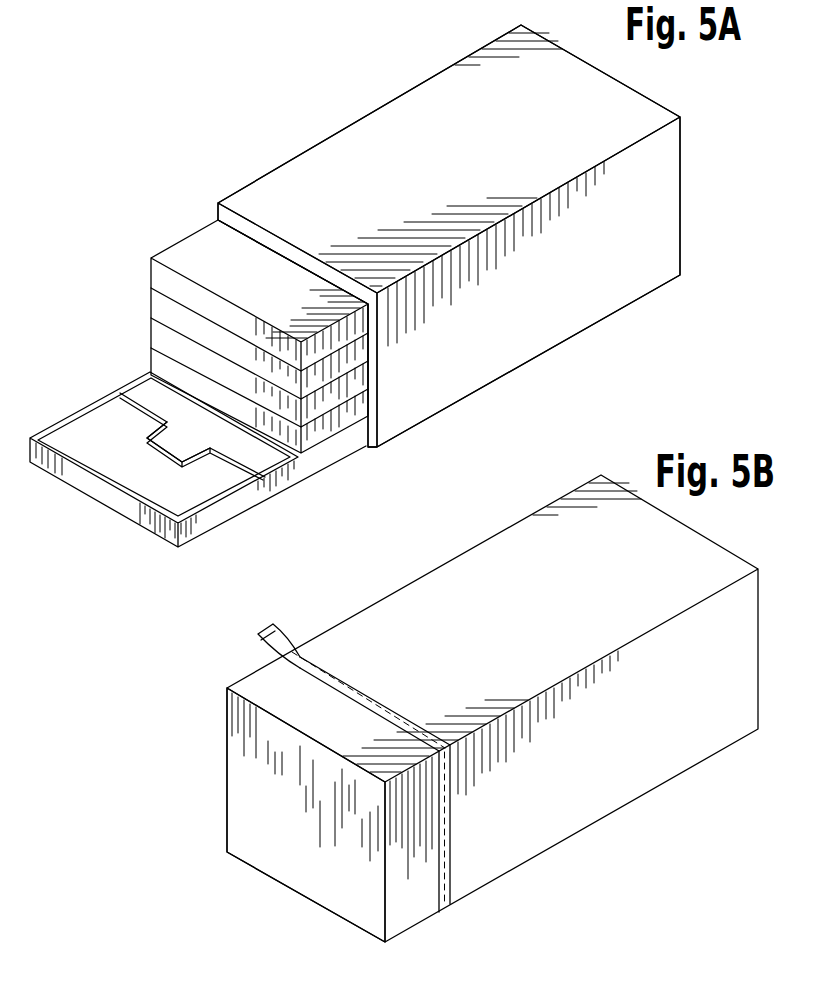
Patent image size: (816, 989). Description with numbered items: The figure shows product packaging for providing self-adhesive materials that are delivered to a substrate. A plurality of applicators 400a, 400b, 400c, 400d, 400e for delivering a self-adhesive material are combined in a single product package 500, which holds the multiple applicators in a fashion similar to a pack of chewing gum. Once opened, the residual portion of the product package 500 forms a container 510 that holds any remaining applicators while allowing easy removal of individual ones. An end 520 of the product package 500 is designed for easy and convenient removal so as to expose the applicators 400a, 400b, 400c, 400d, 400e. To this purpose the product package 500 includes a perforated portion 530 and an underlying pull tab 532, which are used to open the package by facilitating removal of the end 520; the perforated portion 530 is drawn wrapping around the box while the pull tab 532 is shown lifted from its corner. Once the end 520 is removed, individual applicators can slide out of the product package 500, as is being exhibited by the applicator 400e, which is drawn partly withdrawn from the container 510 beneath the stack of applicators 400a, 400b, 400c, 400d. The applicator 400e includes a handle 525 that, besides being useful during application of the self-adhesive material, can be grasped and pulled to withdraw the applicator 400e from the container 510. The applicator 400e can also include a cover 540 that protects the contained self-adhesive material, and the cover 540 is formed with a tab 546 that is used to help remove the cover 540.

In FIG. 5A, the product package 500 is at (259, 103).
In FIG. 5A, the container 510 is at (607, 278).
In FIG. 5B, the container 510 is at (573, 795).
In FIG. 5A, the applicator 400a is at (172, 283).
In FIG. 5A, the applicator 400b is at (168, 310).
In FIG. 5A, the applicator 400c is at (165, 337).
In FIG. 5A, the applicator 400d is at (316, 433).
In FIG. 5A, the applicator 400e is at (228, 510).
In FIG. 5A, the handle 525 is at (106, 434).
In FIG. 5A, the cover 540 is at (152, 395).
In FIG. 5A, the tab 546 is at (172, 440).
In FIG. 5B, the end 520 is at (310, 866).
In FIG. 5B, the perforated portion 530 is at (480, 873).
In FIG. 5B, the pull tab 532 is at (268, 620).